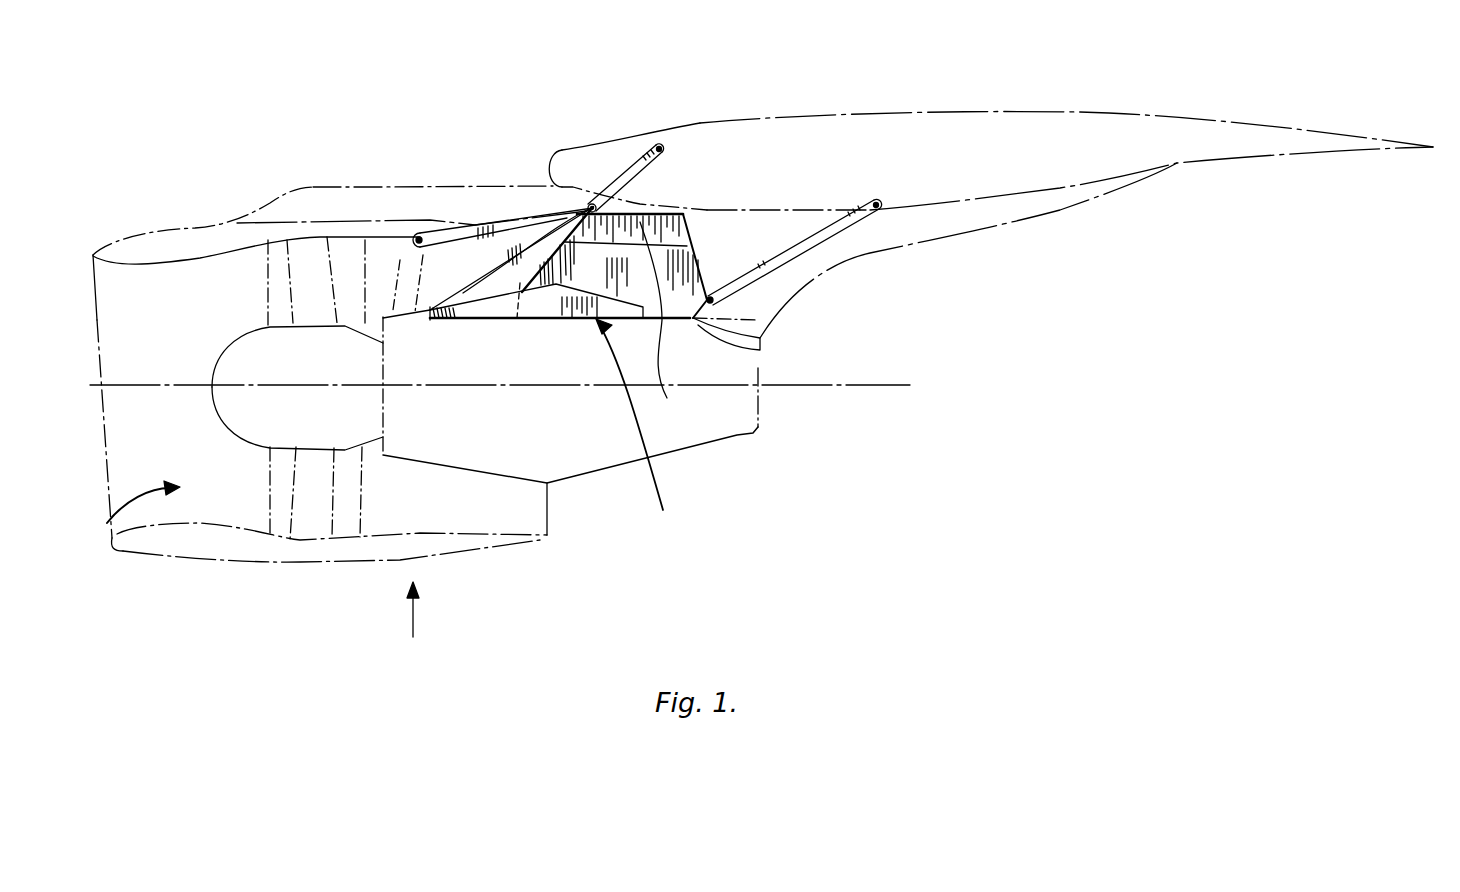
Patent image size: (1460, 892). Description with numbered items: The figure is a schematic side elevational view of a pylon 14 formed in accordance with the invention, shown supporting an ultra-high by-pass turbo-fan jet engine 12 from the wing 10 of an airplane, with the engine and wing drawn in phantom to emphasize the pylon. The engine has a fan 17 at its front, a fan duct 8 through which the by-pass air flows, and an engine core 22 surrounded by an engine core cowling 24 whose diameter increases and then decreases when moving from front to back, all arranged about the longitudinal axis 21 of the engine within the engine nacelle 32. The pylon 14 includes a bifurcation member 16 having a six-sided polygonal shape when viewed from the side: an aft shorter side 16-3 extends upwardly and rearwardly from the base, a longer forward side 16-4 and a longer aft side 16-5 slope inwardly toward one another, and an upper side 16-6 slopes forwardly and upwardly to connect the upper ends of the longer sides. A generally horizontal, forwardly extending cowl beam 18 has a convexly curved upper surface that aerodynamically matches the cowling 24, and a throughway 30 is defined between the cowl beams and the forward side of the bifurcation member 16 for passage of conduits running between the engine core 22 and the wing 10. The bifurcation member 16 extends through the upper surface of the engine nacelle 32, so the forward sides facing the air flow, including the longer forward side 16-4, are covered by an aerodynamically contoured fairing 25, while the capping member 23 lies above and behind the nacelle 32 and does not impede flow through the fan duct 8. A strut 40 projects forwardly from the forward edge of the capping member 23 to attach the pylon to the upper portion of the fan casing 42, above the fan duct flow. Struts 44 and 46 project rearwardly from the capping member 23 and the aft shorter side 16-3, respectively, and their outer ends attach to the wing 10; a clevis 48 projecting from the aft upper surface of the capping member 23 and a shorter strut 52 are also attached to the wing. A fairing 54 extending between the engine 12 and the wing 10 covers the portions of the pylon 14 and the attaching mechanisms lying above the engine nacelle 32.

The fan duct 8 is at (107, 523).
The wing 10 is at (990, 108).
The turbo-fan jet engine 12 is at (413, 637).
The pylon 14 is at (570, 420).
The bifurcation member 16 is at (680, 320).
The aft shorter side 16-3 is at (760, 348).
The longer forward side 16-4 is at (543, 287).
The longer aft side 16-5 is at (700, 275).
The upper side 16-6 is at (680, 321).
The fan 17 is at (289, 520).
The left cowl beam 18 is at (443, 322).
The longitudinal axis 21 is at (868, 385).
The engine core 22 is at (737, 435).
The capping member 23 is at (640, 222).
The engine core cowling 24 is at (577, 483).
The fairing 25 is at (480, 287).
The throughway 30 is at (491, 313).
The engine nacelle 32 is at (167, 227).
The strut 40 is at (497, 225).
The fan casing 42 is at (403, 258).
The strut 44 is at (647, 148).
The strut 46 is at (838, 233).
The clevis 48 is at (690, 207).
The shorter strut 52 is at (687, 184).
The fairing 54 is at (295, 197).